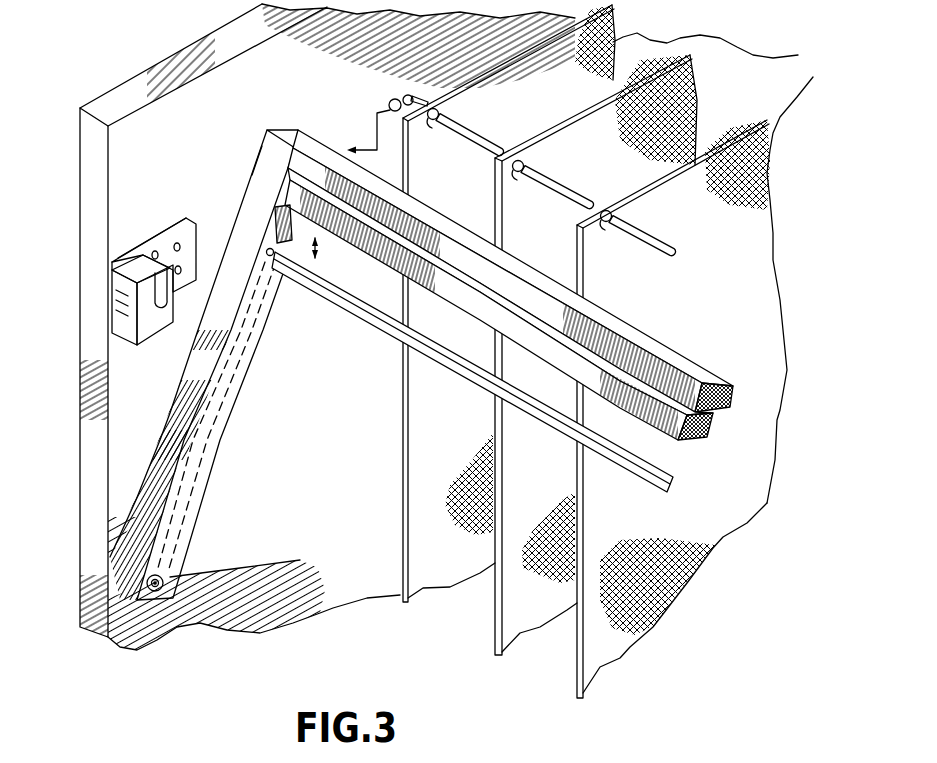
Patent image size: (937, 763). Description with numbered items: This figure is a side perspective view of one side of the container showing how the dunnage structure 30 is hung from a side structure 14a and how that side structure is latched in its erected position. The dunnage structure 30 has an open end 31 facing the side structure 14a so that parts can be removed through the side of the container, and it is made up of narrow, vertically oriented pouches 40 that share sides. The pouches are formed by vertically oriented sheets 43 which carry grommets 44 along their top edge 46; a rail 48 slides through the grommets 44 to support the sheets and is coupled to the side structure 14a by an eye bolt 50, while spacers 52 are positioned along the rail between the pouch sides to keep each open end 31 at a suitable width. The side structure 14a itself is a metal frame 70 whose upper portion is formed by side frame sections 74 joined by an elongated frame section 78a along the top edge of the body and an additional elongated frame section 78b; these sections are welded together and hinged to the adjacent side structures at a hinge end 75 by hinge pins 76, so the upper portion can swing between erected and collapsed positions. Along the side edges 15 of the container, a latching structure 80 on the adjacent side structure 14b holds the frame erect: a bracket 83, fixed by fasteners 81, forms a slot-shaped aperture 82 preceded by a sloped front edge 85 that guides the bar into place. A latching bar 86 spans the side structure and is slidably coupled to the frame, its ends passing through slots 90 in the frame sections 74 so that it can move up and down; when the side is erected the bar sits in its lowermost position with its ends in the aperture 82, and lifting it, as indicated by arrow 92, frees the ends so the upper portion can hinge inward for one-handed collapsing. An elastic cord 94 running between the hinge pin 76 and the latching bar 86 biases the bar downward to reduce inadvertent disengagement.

The side structure 14a is at (240, 183).
The side structure 14b is at (121, 84).
The side edges 15 is at (92, 454).
The dunnage structure 30 is at (686, 592).
The open end 31 is at (420, 628).
The pouches 40 is at (473, 607).
The vertically oriented sheets 43 is at (545, 253).
The grommets 44 is at (431, 122).
The top edge 46 is at (503, 58).
The rail 48 is at (611, 220).
The eye bolt 50 is at (391, 100).
The spacers 52 is at (478, 137).
The frame 70 is at (338, 402).
The frame sections 74 is at (250, 353).
The hinge end 75 is at (195, 582).
The hinge pins 76 is at (165, 575).
The elongated frame section 78a is at (667, 355).
The additional elongated frame section 78b is at (663, 440).
The latching structure 80 is at (123, 303).
The fasteners 81 is at (155, 250).
The aperture 82 is at (143, 345).
The bracket 83 is at (133, 262).
The sloped front edge 85 is at (168, 303).
The latching bar 86 is at (600, 462).
The slots 90 is at (294, 258).
The arrow 92 is at (315, 257).
The elastic cord 94 is at (230, 400).